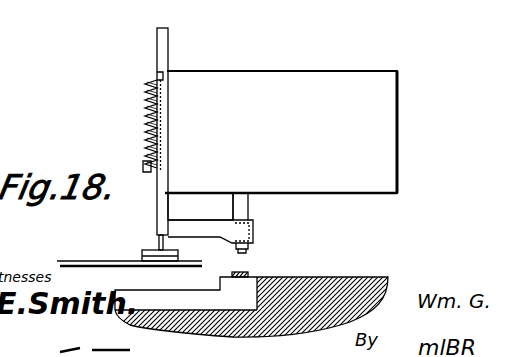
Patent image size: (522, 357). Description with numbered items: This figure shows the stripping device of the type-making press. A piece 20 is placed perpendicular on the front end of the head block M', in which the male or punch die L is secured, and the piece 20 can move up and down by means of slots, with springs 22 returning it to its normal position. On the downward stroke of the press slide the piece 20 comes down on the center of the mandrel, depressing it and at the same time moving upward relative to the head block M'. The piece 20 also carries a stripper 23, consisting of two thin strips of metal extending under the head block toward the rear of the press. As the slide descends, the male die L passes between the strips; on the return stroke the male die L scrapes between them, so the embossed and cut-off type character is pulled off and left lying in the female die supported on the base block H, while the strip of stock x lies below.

The piece 20 is at (157, 56).
The springs 22 is at (149, 120).
The stripper 23 is at (189, 214).
The block M' is at (281, 106).
The male or punch die L is at (258, 210).
The base block H is at (355, 277).
The strip of stock x is at (250, 270).